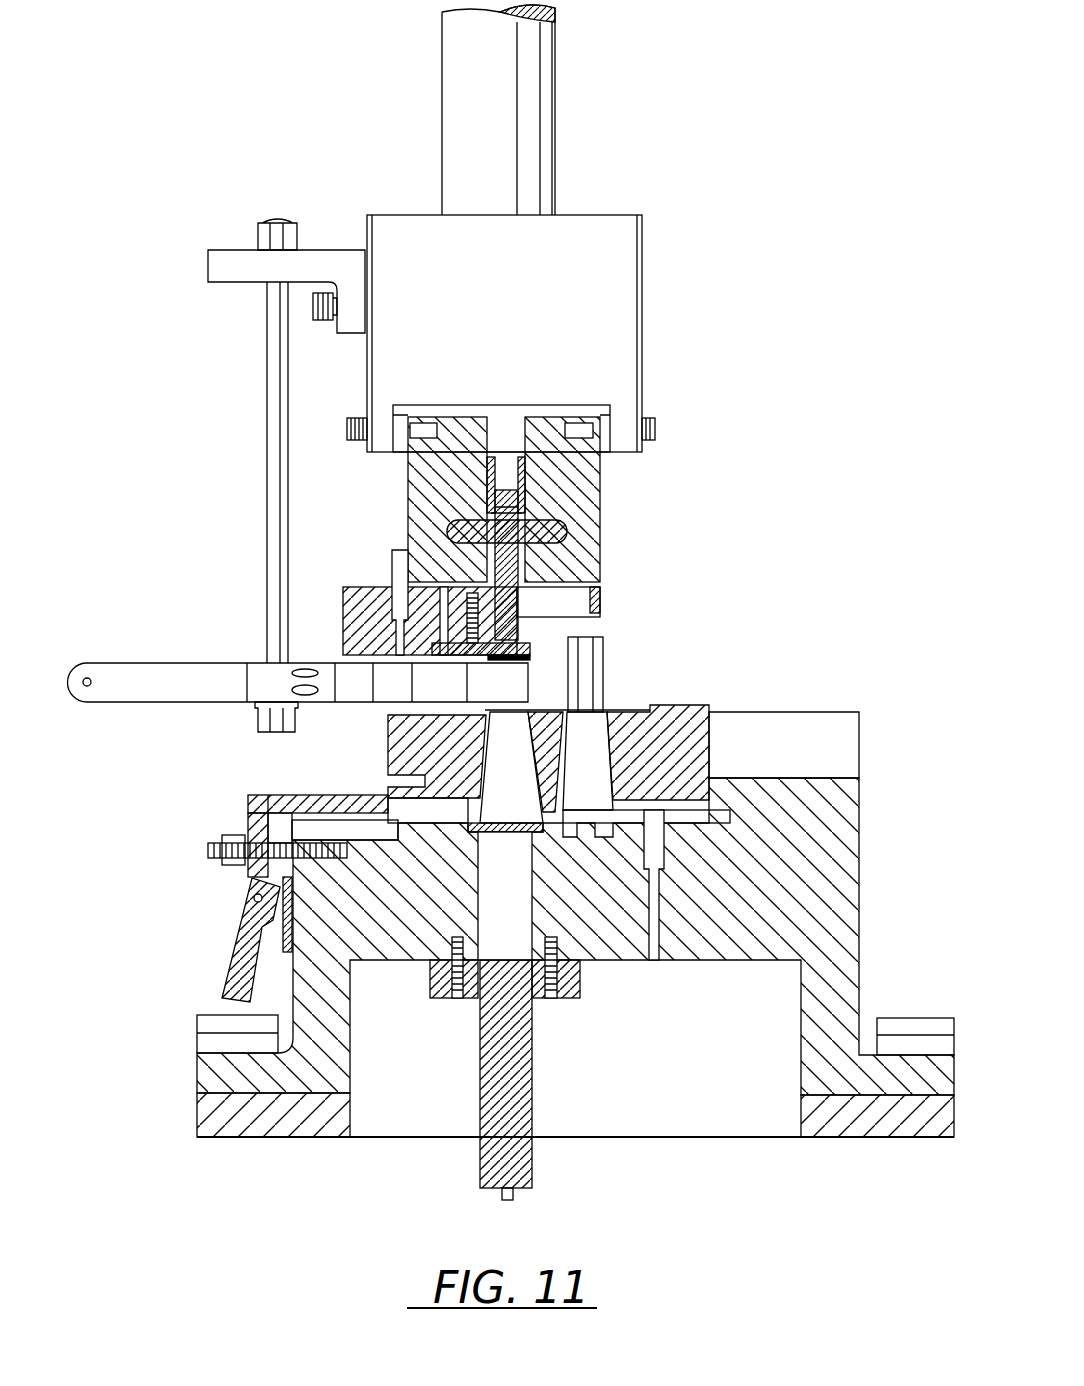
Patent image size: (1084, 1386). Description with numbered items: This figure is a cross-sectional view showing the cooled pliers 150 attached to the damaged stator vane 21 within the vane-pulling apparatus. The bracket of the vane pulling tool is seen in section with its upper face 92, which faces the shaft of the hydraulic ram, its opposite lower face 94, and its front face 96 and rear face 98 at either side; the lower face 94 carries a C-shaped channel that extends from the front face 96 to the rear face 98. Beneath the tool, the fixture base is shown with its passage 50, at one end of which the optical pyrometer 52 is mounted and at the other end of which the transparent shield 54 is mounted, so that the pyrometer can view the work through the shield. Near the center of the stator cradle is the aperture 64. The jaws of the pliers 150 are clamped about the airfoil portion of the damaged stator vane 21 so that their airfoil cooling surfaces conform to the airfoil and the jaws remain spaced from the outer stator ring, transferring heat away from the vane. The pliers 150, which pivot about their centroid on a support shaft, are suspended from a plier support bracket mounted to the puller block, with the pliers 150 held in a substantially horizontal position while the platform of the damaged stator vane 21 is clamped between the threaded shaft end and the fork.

The upper face 92 is at (569, 407).
The front face 96 is at (408, 510).
The rear face 98 is at (600, 530).
The lower face 94 is at (570, 588).
The damaged stator vane 21 is at (530, 650).
The cooled pliers 150 is at (167, 688).
The aperture 64 is at (513, 725).
The transparent shield 54 is at (527, 835).
The passage 50 is at (527, 913).
The optical pyrometer 52 is at (525, 1073).